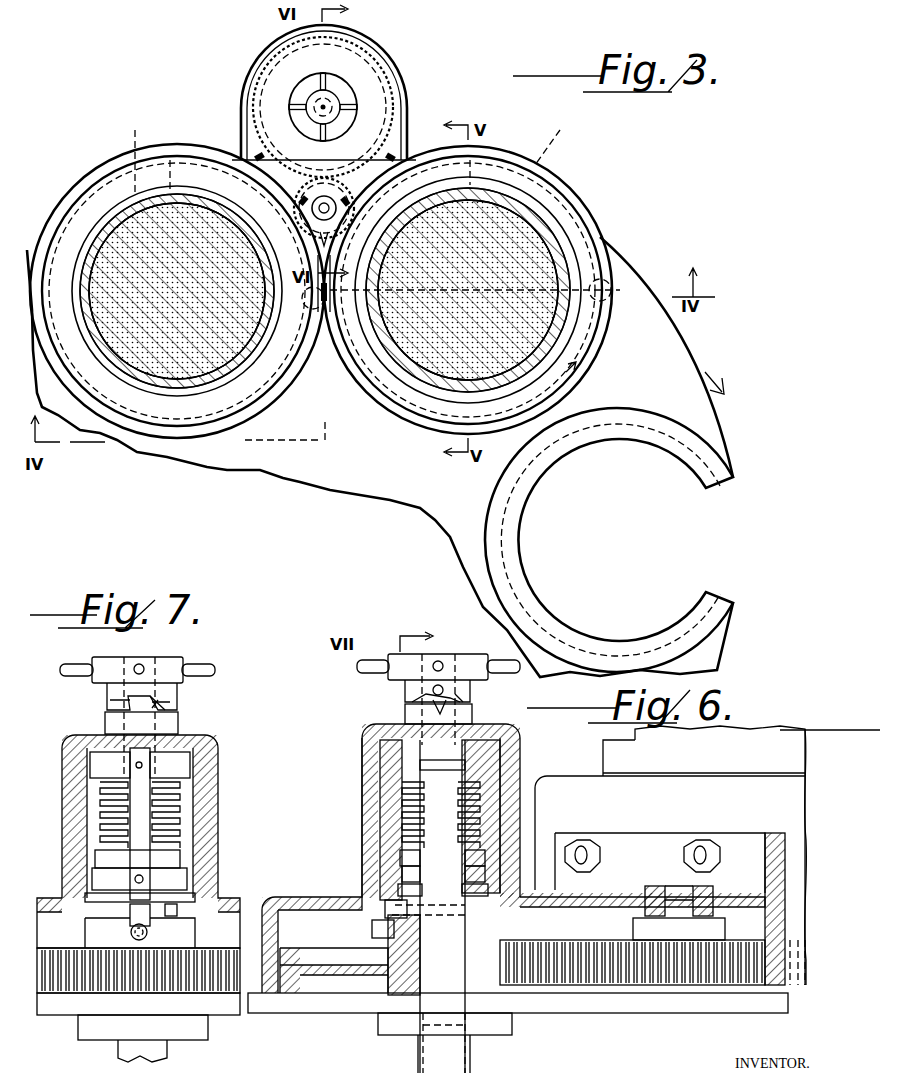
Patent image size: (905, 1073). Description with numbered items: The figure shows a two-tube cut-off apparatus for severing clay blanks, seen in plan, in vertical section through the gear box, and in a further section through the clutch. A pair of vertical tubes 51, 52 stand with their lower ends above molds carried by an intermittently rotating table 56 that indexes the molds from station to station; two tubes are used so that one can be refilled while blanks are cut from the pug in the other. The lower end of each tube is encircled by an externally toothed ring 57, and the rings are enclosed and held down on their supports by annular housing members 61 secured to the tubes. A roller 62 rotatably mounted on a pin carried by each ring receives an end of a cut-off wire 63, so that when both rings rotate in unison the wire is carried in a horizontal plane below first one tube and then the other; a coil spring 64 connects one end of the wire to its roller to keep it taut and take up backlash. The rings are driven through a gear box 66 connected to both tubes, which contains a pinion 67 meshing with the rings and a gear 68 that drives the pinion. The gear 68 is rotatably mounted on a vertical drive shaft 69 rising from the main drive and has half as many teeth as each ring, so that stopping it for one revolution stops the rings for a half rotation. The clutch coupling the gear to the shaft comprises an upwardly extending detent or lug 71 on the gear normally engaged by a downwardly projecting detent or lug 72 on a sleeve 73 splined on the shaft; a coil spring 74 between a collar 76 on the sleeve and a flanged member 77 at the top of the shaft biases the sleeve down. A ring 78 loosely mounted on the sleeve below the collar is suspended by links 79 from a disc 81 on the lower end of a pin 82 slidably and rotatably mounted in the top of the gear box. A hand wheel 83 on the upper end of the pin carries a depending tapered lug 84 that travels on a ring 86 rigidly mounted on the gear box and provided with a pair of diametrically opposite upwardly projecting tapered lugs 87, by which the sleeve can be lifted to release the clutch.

In FIG. 3, the vertical tube 51 is at (538, 208).
In FIG. 6, the vertical tube 51 is at (785, 728).
In FIG. 3, the vertical tube 52 is at (133, 215).
In FIG. 3, the intermittently rotating table 56 is at (636, 282).
In FIG. 3, the externally toothed ring 57 is at (349, 147).
In FIG. 6, the externally toothed ring 57 is at (797, 985).
In FIG. 3, the annular housing member 61 is at (174, 160).
In FIG. 6, the annular housing member 61 is at (576, 780).
In FIG. 3, the roller 62 is at (632, 308).
In FIG. 3, the cut-off wire 63 is at (498, 301).
In FIG. 3, the coil spring 64 is at (604, 330).
In FIG. 7, the coil spring 64 is at (205, 770).
In FIG. 3, the gear box 66 is at (388, 70).
In FIG. 6, the gear box 66 is at (372, 768).
In FIG. 3, the pinion 67 is at (328, 194).
In FIG. 6, the pinion 67 is at (670, 975).
In FIG. 3, the gear 68 is at (376, 42).
In FIG. 7, the gear 68 is at (205, 980).
In FIG. 6, the gear 68 is at (562, 978).
In FIG. 7, the vertical drive shaft 69 is at (160, 1055).
In FIG. 6, the vertical drive shaft 69 is at (455, 1060).
In FIG. 7, the detent or lug 71 is at (150, 933).
In FIG. 6, the detent or lug 71 is at (372, 932).
In FIG. 7, the detent or lug 72 is at (178, 915).
In FIG. 6, the detent or lug 72 is at (385, 912).
In FIG. 7, the sleeve 73 is at (195, 897).
In FIG. 6, the sleeve 73 is at (398, 892).
In FIG. 7, the coil spring 74 is at (178, 822).
In FIG. 6, the coil spring 74 is at (402, 822).
In FIG. 7, the collar 76 is at (180, 852).
In FIG. 6, the collar 76 is at (402, 855).
In FIG. 7, the flanged member 77 is at (178, 796).
In FIG. 6, the flanged member 77 is at (402, 792).
In FIG. 7, the ring 78 is at (180, 876).
In FIG. 6, the ring 78 is at (402, 875).
In FIG. 7, the link 79 is at (135, 835).
In FIG. 6, the link 79 is at (410, 838).
In FIG. 7, the disc 81 is at (182, 768).
In FIG. 6, the disc 81 is at (410, 748).
In FIG. 7, the pin 82 is at (128, 705).
In FIG. 6, the pin 82 is at (448, 722).
In FIG. 3, the hand wheel 83 is at (334, 92).
In FIG. 7, the hand wheel 83 is at (92, 660).
In FIG. 6, the hand wheel 83 is at (476, 662).
In FIG. 7, the tapered lug 84 is at (158, 703).
In FIG. 6, the tapered lug 84 is at (412, 690).
In FIG. 7, the ring 86 is at (170, 723).
In FIG. 6, the ring 86 is at (405, 716).
In FIG. 7, the tapered lug 87 is at (118, 714).
In FIG. 6, the tapered lug 87 is at (420, 706).